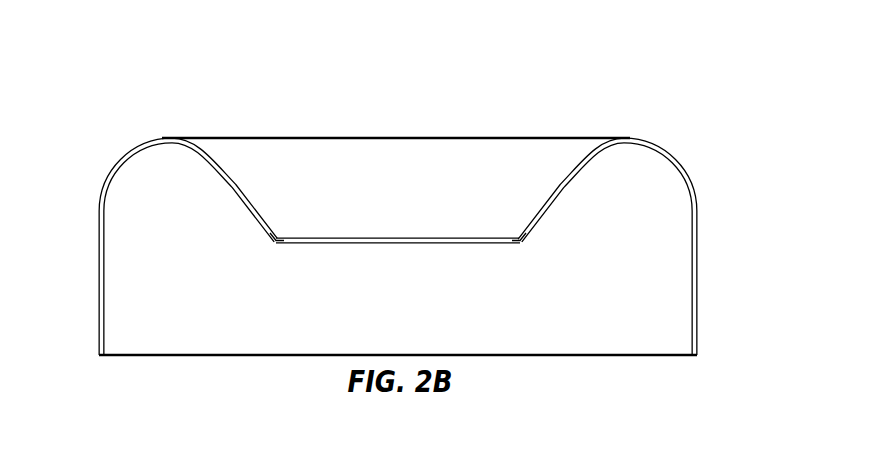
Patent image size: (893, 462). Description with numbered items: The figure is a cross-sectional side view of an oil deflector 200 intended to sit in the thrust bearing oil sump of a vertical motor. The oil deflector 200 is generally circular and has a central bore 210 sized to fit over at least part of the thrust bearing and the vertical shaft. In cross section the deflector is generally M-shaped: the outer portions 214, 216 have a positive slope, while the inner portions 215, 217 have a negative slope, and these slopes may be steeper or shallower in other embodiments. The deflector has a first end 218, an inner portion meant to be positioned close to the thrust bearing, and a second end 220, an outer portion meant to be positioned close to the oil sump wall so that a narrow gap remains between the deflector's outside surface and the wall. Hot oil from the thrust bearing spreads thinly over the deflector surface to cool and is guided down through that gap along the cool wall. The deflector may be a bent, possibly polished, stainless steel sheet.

The oil deflector 200 is at (402, 213).
The central bore 210 is at (387, 215).
The outer portion 214 is at (72, 208).
The inner portion 215 is at (182, 113).
The outer portion 216 is at (614, 113).
The inner portion 217 is at (724, 208).
The first end 218 is at (277, 244).
The second end 220 is at (98, 353).